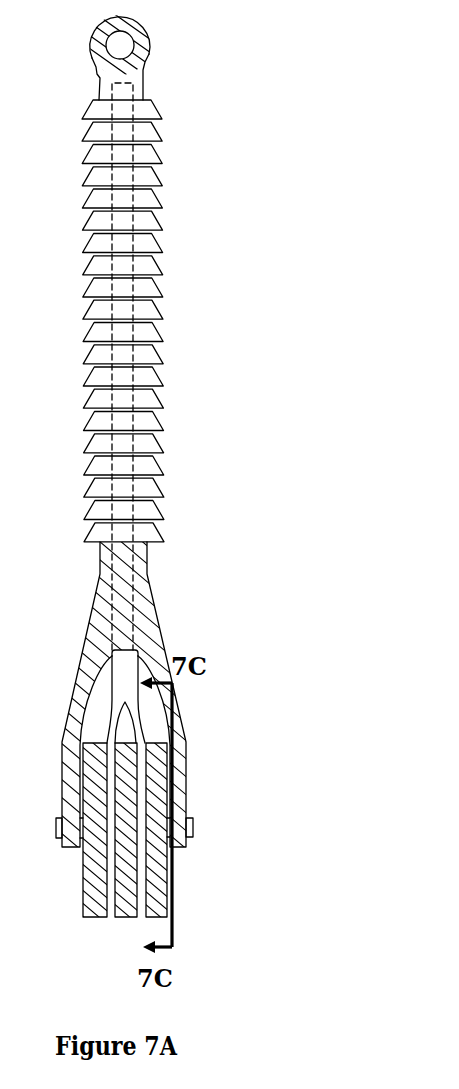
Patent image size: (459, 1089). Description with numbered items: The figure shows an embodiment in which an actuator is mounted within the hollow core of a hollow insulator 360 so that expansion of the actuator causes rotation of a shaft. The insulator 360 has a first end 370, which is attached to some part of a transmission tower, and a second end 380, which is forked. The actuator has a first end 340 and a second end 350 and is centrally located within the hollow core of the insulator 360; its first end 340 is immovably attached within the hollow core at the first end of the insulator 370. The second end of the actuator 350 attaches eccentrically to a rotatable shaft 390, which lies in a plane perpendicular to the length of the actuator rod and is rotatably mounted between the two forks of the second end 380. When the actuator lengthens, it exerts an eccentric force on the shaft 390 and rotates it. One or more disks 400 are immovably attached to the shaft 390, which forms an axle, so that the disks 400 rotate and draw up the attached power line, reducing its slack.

The first end of the actuator 340 is at (160, 249).
The second end of the actuator 350 is at (138, 712).
The hollow insulator 360 is at (167, 403).
The first end of the insulator 370 is at (145, 98).
The second end of the insulator 380 is at (160, 627).
The rotatable shaft 390 is at (194, 832).
The disks 400 is at (163, 917).